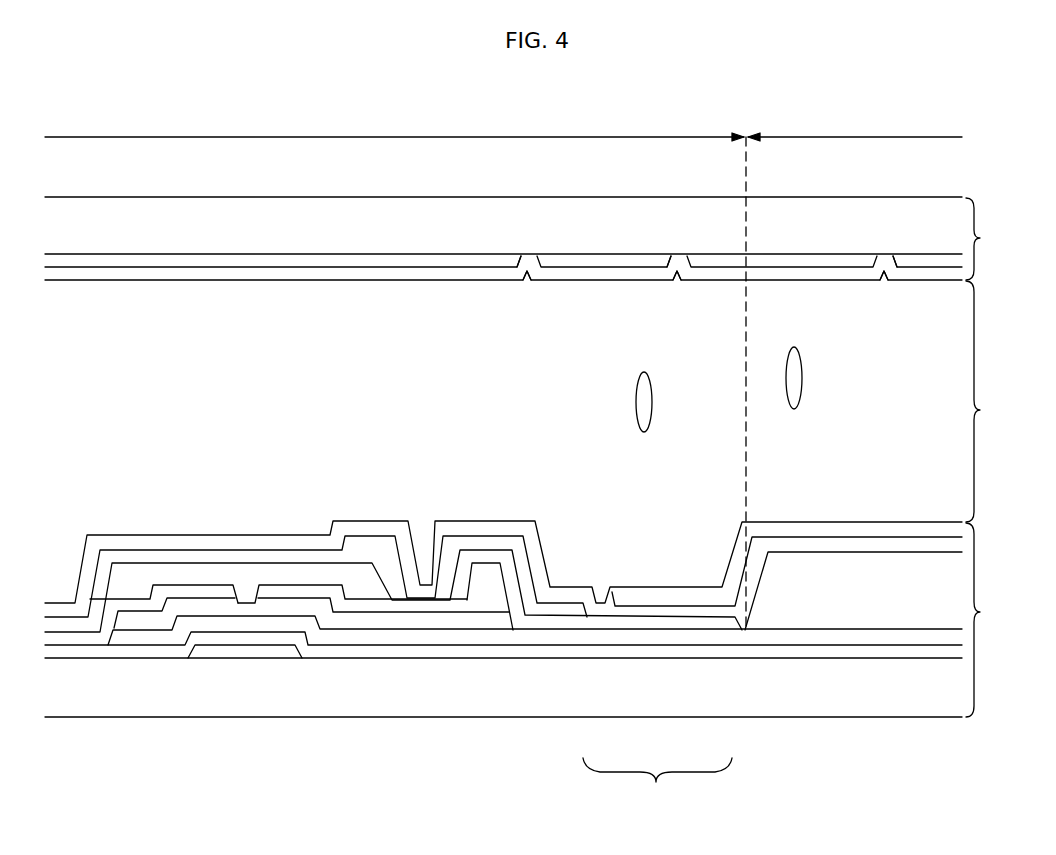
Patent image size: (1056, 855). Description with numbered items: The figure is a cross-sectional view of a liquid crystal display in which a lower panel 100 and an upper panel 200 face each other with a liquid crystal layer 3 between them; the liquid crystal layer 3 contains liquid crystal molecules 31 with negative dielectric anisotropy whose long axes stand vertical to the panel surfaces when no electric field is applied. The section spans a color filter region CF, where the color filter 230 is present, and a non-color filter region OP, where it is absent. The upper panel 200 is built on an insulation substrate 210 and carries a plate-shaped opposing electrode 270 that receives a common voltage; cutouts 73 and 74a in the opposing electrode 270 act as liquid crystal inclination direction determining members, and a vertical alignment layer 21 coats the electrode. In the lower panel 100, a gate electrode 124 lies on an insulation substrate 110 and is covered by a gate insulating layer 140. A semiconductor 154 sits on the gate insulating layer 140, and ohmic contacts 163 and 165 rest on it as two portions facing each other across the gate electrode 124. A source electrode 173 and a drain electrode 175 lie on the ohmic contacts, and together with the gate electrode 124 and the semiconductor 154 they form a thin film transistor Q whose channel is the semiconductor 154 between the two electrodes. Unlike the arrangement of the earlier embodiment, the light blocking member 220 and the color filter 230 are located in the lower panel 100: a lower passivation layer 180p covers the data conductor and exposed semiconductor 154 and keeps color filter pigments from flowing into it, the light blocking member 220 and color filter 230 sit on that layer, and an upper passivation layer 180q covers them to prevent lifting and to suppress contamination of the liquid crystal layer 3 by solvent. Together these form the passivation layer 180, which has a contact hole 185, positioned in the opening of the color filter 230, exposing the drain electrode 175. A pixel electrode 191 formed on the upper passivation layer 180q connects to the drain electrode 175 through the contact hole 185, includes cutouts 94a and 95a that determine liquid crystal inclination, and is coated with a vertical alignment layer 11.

The non-color filter region OP is at (394, 126).
The color filter region CF is at (854, 370).
The upper panel 200 is at (995, 239).
The insulation substrate 210 is at (113, 210).
The opposing electrode 270 is at (170, 262).
The alignment layer 21 is at (248, 273).
The cutout 73 is at (517, 265).
The cutout 74a is at (667, 265).
The liquid crystal layer 3 is at (983, 401).
The liquid crystal molecule 31 is at (803, 378).
The lower panel 100 is at (995, 620).
The insulation substrate 110 is at (118, 706).
The gate electrode 124 is at (275, 652).
The gate insulating layer 140 is at (521, 652).
The semiconductor 154 is at (337, 638).
The ohmic contact 163 is at (212, 616).
The ohmic contact 165 is at (397, 627).
The source electrode 173 is at (195, 606).
The drain electrode 175 is at (442, 620).
The thin film transistor Q is at (250, 585).
The light blocking member 220 is at (177, 575).
The lower passivation layer 180p is at (615, 637).
The upper passivation layer 180q is at (688, 625).
The passivation layer 180 is at (657, 785).
The pixel electrode 191 is at (355, 545).
The contact hole 185 is at (450, 605).
The alignment layer 11 is at (472, 525).
The cutout 94a is at (618, 604).
The color filter 230 is at (848, 575).
The cutout 95a is at (733, 628).